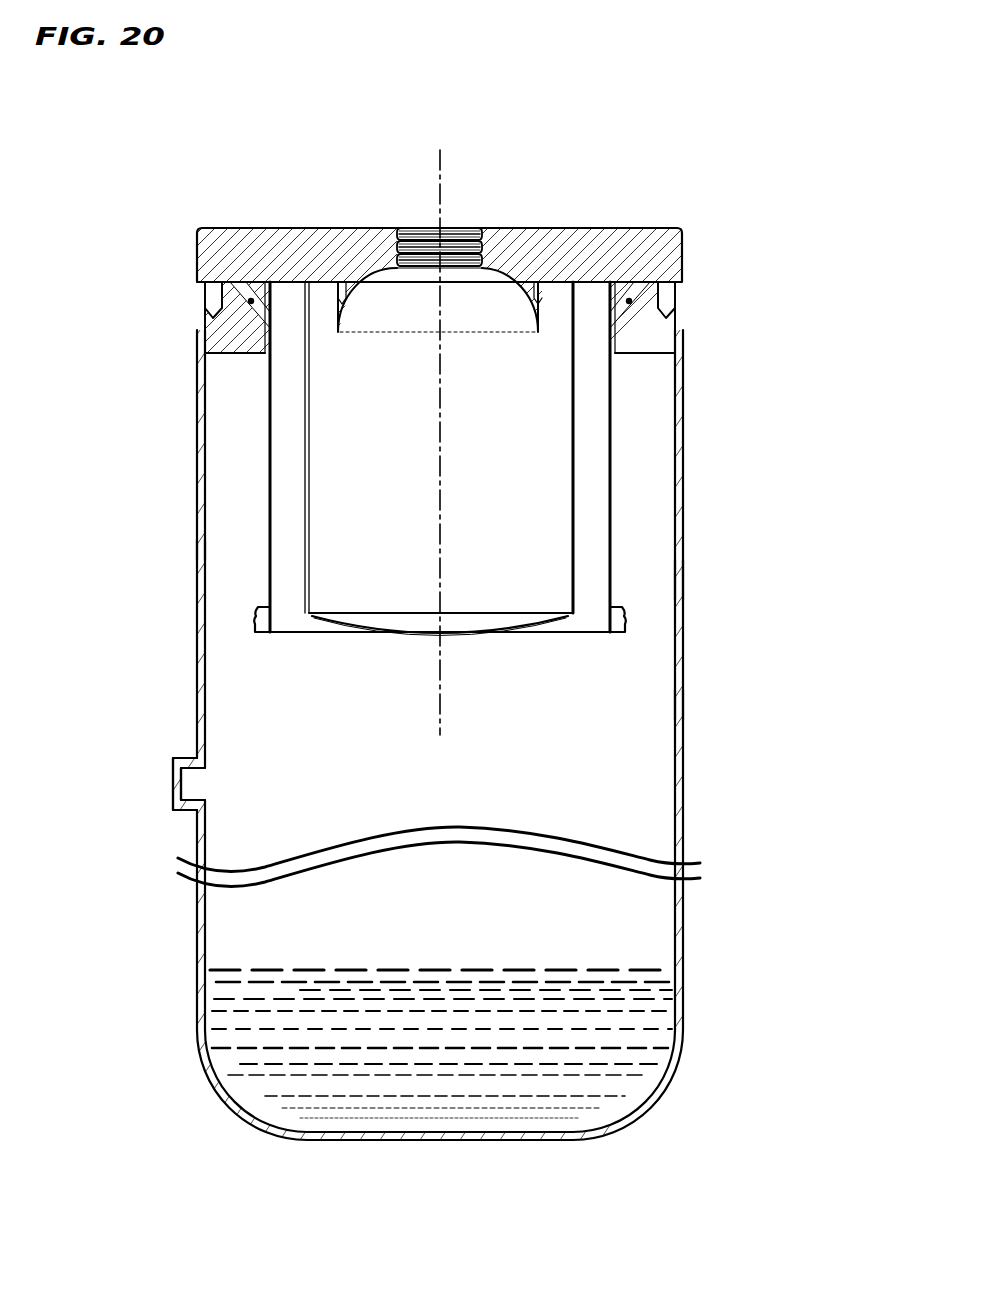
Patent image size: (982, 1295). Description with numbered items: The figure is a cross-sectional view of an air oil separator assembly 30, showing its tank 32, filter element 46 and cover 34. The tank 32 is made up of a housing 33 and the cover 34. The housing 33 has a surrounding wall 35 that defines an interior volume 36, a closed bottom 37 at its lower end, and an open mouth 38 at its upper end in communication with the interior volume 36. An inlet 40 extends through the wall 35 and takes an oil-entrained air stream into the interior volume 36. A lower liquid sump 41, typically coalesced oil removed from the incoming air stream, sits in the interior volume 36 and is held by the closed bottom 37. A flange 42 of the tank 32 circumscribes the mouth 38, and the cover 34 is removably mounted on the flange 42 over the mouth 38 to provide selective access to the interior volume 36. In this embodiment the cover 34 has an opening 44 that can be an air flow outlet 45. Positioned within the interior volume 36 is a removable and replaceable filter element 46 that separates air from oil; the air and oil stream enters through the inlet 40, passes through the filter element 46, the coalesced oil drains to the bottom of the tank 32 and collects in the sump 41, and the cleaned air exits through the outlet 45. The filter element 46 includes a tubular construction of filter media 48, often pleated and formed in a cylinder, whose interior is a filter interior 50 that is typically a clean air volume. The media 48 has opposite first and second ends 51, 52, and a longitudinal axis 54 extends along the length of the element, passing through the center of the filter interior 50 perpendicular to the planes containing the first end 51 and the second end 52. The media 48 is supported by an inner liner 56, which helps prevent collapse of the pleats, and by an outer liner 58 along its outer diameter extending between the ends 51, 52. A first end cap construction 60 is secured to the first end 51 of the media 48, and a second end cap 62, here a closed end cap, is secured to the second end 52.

The air oil separator assembly 30 is at (752, 220).
The tank 32 is at (683, 512).
The housing 33 is at (683, 584).
The cover 34 is at (218, 228).
The surrounding wall 35 is at (195, 545).
The interior volume 36 is at (676, 693).
The closed bottom 37 is at (530, 1142).
The open mouth 38 is at (200, 338).
The inlet 40 is at (178, 765).
The lower liquid sump 41 is at (650, 1011).
The flange 42 is at (683, 328).
The opening 44 is at (402, 228).
The air flow outlet 45 is at (461, 228).
The filter element 46 is at (632, 434).
The filter media 48 is at (588, 497).
The filter interior 50 is at (312, 581).
The first end 51 is at (588, 282).
The second end 52 is at (580, 636).
The longitudinal axis 54 is at (440, 152).
The inner liner 56 is at (310, 431).
The outer liner 58 is at (268, 458).
The first end cap construction 60 is at (286, 282).
The second end cap 62 is at (293, 636).